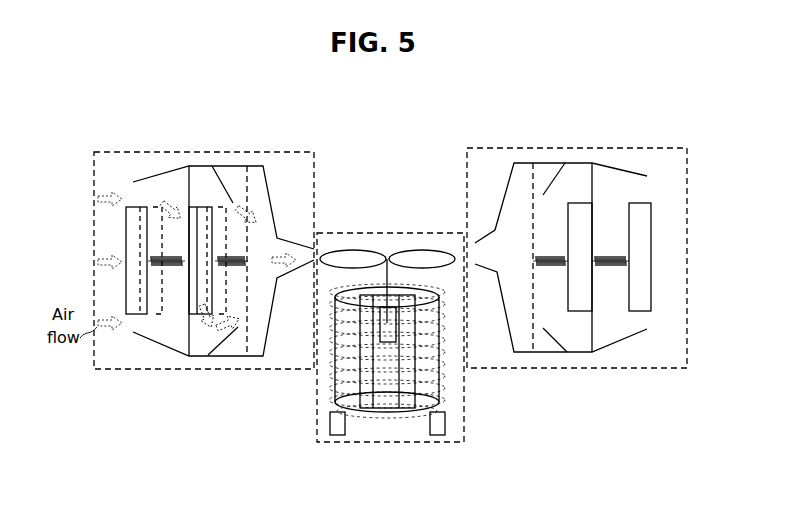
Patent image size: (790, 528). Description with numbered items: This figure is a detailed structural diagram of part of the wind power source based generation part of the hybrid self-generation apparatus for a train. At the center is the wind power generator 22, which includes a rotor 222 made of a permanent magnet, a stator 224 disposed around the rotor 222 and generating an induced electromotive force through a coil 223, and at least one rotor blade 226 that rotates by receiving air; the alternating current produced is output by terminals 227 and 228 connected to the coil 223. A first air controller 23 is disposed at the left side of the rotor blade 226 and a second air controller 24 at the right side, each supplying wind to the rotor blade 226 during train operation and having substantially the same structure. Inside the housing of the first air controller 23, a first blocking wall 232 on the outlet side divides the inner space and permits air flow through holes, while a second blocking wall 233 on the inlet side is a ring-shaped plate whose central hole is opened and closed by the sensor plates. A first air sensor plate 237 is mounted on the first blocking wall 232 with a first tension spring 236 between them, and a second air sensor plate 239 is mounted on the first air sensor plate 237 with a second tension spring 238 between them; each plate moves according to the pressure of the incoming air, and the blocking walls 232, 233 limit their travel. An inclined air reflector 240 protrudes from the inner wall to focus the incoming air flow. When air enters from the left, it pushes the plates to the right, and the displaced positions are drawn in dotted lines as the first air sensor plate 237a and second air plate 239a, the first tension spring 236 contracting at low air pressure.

The wind power generator 22 is at (404, 233).
The first air controller 23 is at (143, 152).
The second air controller 24 is at (585, 148).
The rotor 222 is at (437, 397).
The coil 223 is at (447, 375).
The stator 224 is at (388, 412).
The rotor blade 226 is at (353, 252).
The terminal 227 is at (338, 437).
The terminal 228 is at (440, 437).
The first blocking wall 232 is at (252, 328).
The second blocking wall 233 is at (182, 335).
The first tension spring 236 is at (222, 228).
The first air sensor plate 237 is at (197, 293).
The first air sensor plate (pushed position) 237a is at (215, 325).
The second tension spring 238 is at (150, 266).
The second air sensor plate 239 is at (125, 236).
The second air plate (pushed position) 239a is at (140, 257).
The air reflector 240 is at (223, 180).